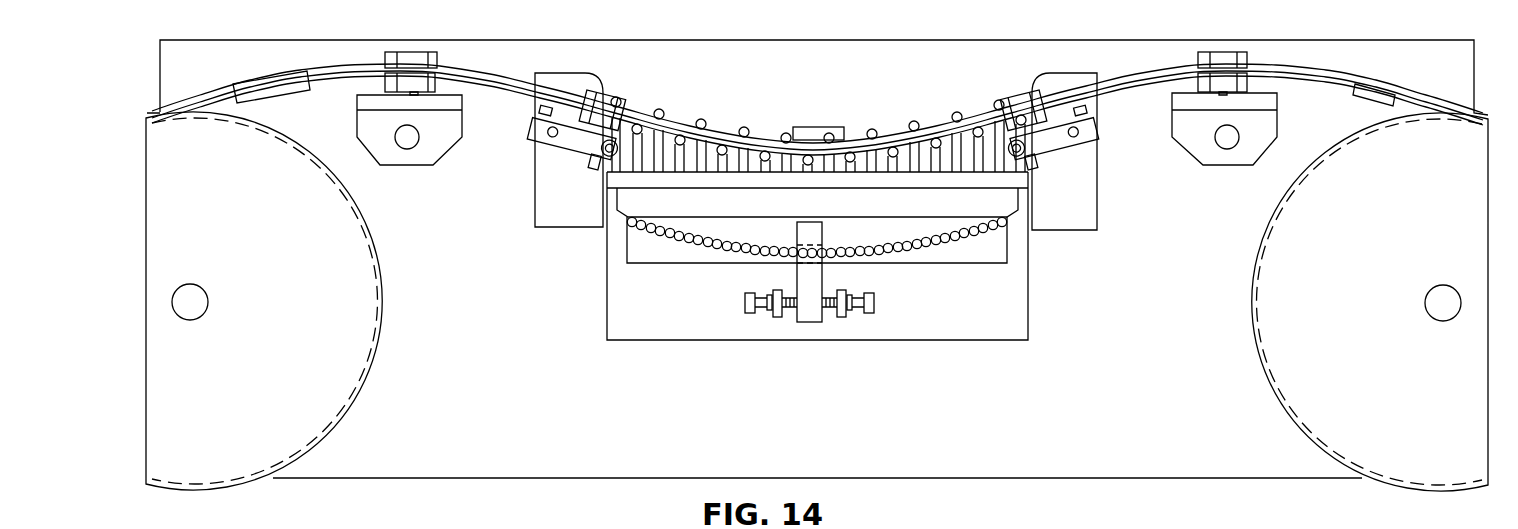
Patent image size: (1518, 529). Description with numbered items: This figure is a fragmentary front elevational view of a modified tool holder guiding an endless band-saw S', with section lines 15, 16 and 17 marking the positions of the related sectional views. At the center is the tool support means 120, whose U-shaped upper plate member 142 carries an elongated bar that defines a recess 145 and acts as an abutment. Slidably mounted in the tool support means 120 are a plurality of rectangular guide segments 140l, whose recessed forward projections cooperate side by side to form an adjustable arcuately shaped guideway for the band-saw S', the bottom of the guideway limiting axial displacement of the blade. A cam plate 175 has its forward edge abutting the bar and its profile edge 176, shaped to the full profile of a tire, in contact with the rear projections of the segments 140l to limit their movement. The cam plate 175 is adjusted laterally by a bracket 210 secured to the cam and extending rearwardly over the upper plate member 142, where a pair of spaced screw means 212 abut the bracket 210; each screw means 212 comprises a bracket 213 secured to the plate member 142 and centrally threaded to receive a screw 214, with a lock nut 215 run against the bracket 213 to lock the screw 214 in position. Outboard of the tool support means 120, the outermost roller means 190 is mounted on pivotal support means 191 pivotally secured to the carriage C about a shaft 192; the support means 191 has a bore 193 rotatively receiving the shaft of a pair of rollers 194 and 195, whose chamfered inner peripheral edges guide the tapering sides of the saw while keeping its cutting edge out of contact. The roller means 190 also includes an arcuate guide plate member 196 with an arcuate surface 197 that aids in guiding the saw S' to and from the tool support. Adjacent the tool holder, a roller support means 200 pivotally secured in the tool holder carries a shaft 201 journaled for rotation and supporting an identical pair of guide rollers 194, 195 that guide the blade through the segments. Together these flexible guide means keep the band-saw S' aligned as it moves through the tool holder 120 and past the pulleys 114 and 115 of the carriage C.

The pulley 114 is at (292, 383).
The pulley 115 is at (1355, 371).
The tool support means 120 is at (1052, 300).
The guide segments 140l is at (988, 176).
The U-shaped upper plate member 142 is at (655, 332).
The recess 145 is at (697, 258).
The cam plate 175 is at (907, 219).
The profile edge 176 is at (902, 250).
The outermost roller means 190 is at (465, 58).
The pivotal support means 191 is at (413, 166).
The shaft 192 is at (358, 136).
The bore 193 is at (419, 137).
The roller 194 is at (615, 95).
The roller 195 is at (604, 118).
The arcuate guide plate member 196 is at (516, 97).
The arcuate surface 197 is at (480, 77).
The roller support means 200 is at (560, 148).
The shaft 201 is at (594, 170).
The bracket 210 is at (809, 322).
The screw means 212 is at (780, 335).
The bracket 213 is at (775, 317).
The screw 214 is at (745, 298).
The lock nut 215 is at (774, 288).
The carriage C is at (1047, 451).
The band-saw S' is at (1478, 89).
The section line 15- 15 is at (828, 97).
The section line 16- 16 is at (1246, 20).
The section line 17- 17 is at (318, 20).